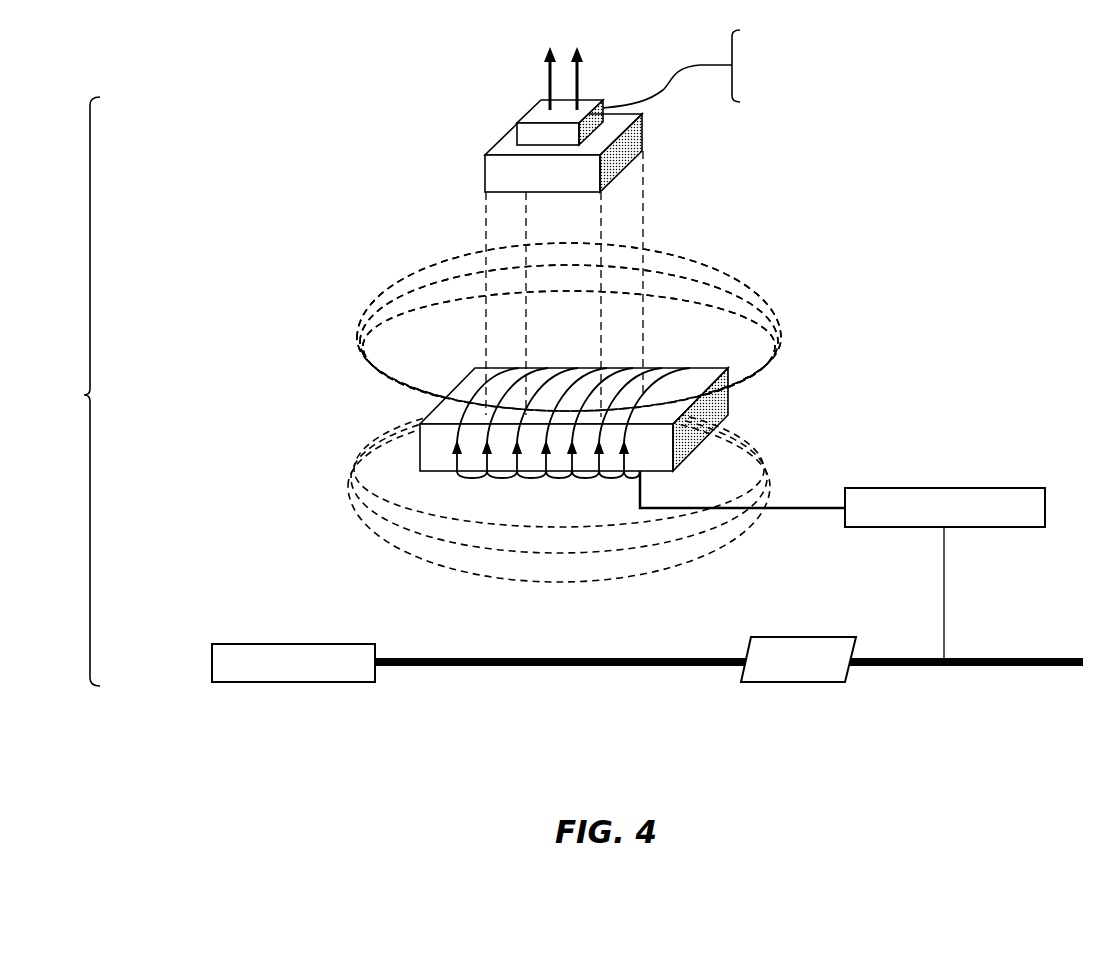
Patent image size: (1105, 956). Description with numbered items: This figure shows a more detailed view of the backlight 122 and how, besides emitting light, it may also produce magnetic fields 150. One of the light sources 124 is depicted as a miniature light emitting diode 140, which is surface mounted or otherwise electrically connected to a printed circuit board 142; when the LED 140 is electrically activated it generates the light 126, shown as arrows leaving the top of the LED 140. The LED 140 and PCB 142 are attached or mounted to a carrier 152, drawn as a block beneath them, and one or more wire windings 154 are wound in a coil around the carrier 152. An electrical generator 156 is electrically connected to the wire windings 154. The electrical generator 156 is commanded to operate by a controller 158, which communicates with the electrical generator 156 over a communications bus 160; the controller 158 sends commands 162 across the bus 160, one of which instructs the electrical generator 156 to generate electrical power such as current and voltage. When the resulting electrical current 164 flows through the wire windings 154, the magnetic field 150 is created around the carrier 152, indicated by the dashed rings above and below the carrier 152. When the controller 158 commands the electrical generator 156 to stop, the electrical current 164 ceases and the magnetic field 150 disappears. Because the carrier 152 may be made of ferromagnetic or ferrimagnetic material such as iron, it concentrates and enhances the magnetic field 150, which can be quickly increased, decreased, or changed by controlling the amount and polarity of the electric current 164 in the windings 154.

The backlight 122 is at (88, 394).
The light source 124 is at (692, 69).
The light 126 is at (547, 85).
The light emitting diode 140 is at (523, 135).
The printed circuit board 142 is at (485, 174).
The magnetic field 150 is at (358, 360).
The carrier 152 is at (730, 411).
The wire winding 154 is at (622, 477).
The electrical generator 156 is at (1030, 488).
The controller 158 is at (240, 644).
The communications bus 160 is at (500, 667).
The command 162 is at (775, 683).
The electrical current 164 is at (507, 477).